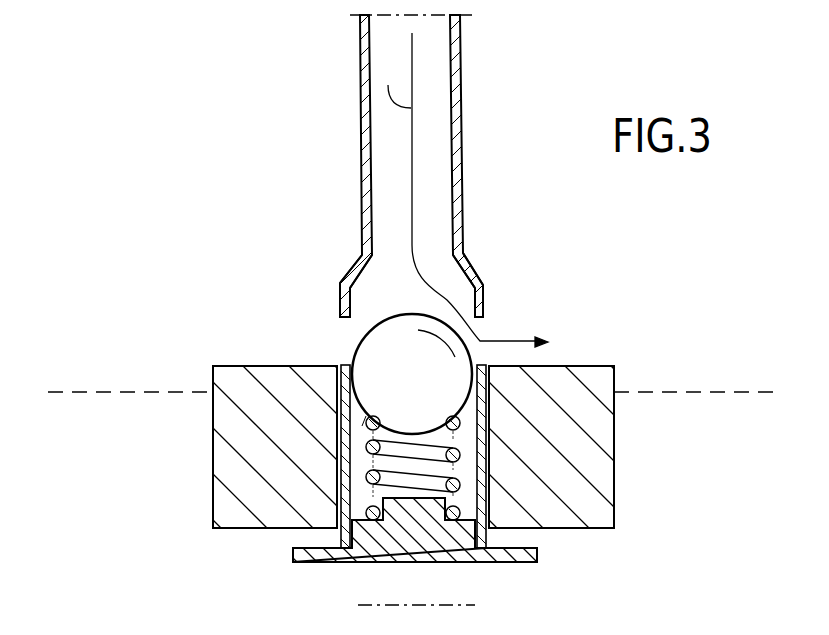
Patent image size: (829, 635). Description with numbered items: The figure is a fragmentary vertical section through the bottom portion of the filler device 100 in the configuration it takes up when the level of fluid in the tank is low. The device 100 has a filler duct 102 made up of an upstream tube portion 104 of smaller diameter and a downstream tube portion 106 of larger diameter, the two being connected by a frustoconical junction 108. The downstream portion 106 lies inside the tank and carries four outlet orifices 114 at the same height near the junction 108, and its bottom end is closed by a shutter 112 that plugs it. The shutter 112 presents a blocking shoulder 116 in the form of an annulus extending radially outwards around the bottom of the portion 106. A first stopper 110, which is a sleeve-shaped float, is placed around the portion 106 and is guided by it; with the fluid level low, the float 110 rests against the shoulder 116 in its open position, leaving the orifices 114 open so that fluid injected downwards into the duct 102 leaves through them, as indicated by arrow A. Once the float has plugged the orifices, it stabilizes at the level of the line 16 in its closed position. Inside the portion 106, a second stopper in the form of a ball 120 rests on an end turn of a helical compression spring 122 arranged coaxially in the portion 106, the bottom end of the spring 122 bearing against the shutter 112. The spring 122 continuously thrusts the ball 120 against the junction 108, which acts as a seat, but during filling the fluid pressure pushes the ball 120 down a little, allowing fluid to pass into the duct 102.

The filler device 100 is at (233, 88).
The filler duct 102 is at (438, 166).
The upstream tube portion 104 is at (462, 165).
The frustoconical junction 108 is at (470, 262).
The outlet orifices 114 is at (350, 329).
The ball 120 is at (430, 388).
The line 16 is at (107, 392).
The first stopper 110 is at (614, 458).
The downstream tube portion 106 is at (488, 458).
The helical compression spring 122 is at (363, 520).
The shutter 112 is at (415, 563).
The blocking shoulder 116 is at (518, 562).